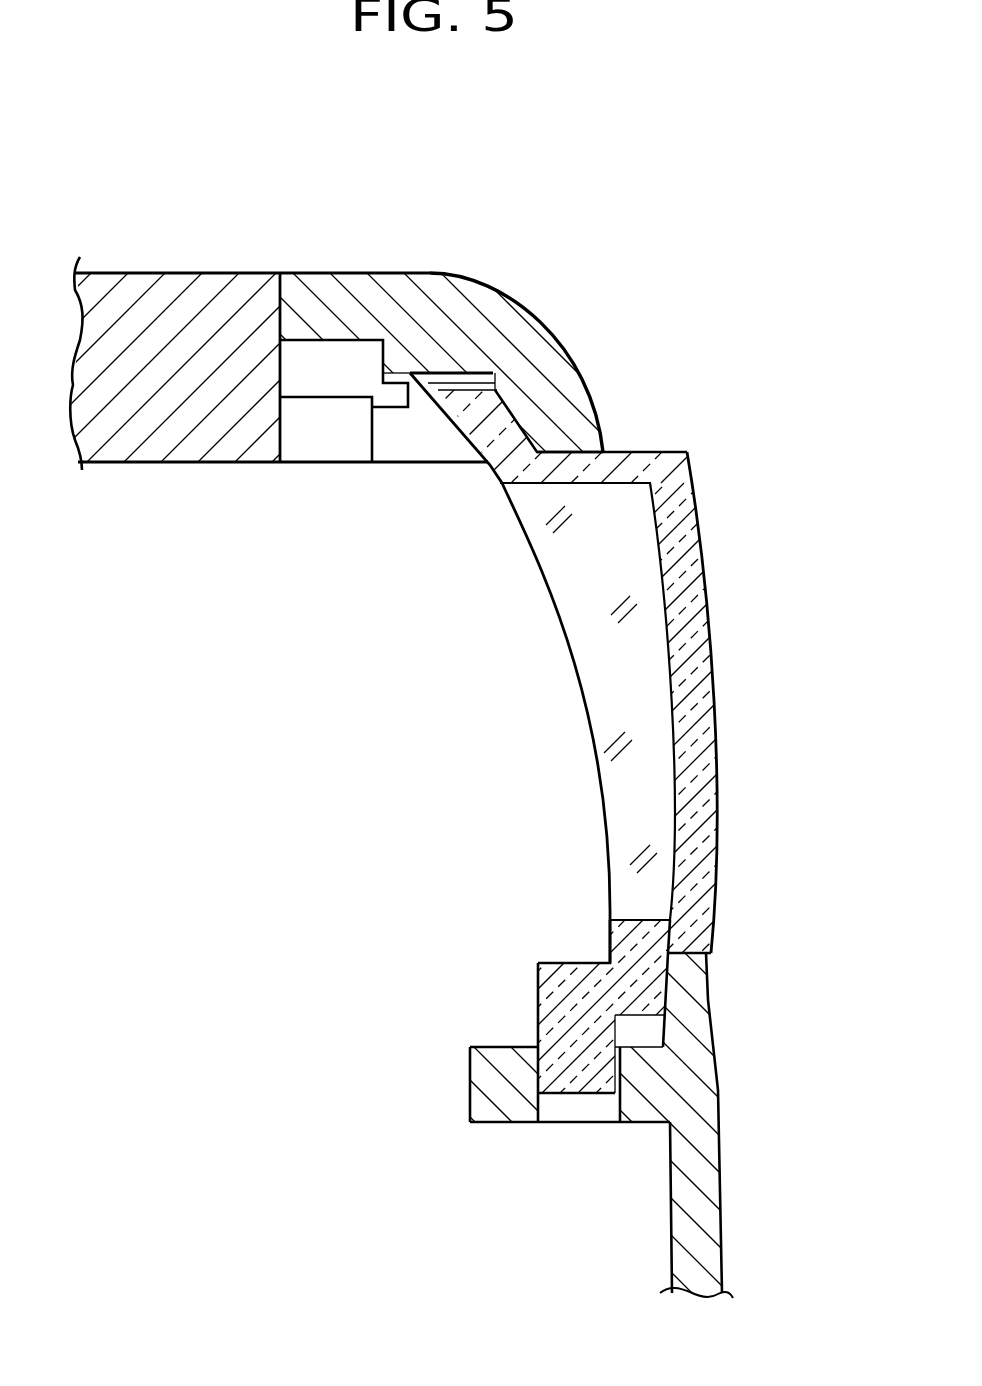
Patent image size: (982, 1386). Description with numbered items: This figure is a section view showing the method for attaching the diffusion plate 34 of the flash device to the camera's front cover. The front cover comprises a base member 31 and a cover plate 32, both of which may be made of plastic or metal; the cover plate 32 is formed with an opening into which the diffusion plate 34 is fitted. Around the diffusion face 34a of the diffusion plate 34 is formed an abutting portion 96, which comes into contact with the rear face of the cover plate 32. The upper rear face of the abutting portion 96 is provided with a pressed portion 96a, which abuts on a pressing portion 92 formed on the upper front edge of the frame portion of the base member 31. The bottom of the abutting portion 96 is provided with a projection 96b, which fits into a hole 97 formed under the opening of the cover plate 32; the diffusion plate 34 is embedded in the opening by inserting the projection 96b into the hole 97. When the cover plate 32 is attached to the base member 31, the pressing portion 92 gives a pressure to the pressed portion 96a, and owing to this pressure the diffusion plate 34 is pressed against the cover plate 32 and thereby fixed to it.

The base member 31 is at (185, 256).
The cover plate 32 is at (572, 315).
The pressing portion 92 is at (320, 440).
The pressed portion 96a is at (417, 440).
The abutting portion 96 is at (490, 468).
The diffusion plate 34 is at (710, 559).
The diffusion face 34a is at (715, 718).
The projection 96b is at (567, 1007).
The hole 97 is at (578, 1105).